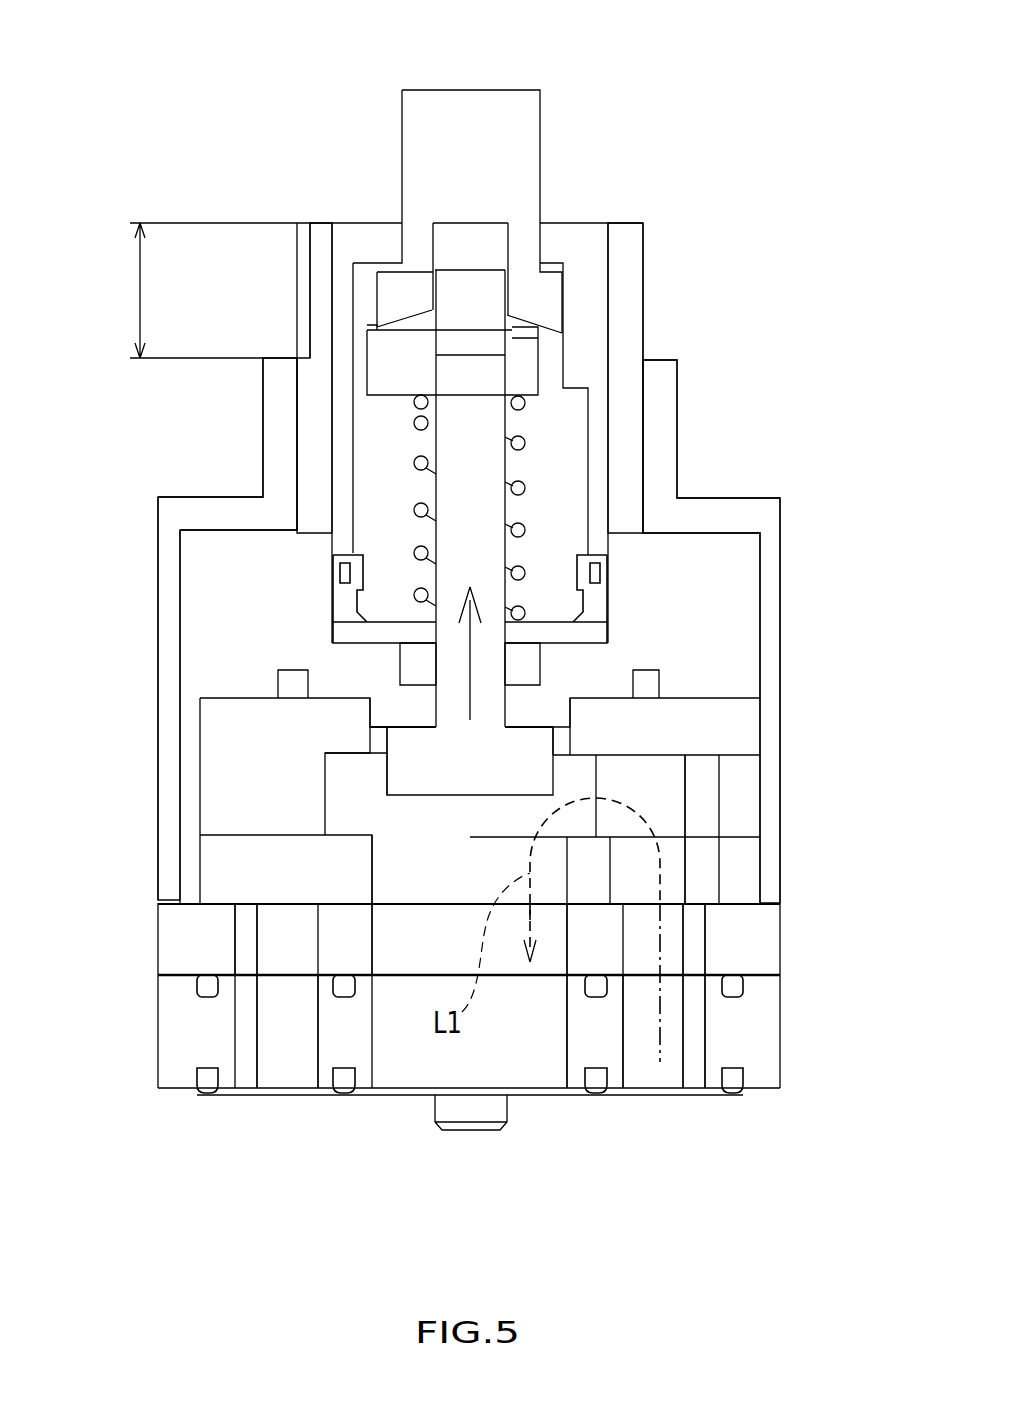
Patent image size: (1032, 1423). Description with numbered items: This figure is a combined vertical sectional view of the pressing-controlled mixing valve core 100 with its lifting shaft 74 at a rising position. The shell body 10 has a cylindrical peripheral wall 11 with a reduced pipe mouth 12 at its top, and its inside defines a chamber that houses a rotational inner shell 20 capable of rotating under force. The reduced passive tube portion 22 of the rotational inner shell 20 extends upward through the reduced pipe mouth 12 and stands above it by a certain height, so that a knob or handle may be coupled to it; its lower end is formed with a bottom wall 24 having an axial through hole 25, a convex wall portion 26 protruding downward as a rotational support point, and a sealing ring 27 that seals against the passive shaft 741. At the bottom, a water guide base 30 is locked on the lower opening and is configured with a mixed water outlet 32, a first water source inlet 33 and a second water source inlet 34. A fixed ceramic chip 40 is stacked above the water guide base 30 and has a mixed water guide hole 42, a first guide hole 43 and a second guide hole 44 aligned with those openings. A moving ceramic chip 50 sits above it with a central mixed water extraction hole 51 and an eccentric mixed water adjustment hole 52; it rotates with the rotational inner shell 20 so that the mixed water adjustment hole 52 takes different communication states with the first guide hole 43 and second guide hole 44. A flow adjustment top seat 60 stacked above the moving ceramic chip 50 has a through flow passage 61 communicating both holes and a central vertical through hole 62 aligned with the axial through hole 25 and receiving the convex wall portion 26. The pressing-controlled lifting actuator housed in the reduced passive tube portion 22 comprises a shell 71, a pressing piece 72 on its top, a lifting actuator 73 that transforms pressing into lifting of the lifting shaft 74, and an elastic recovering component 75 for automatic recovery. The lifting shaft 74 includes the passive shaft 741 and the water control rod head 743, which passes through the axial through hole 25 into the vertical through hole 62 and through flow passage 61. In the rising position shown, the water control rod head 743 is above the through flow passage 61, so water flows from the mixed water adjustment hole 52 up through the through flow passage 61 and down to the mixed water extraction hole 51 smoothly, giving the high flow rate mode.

The pressing-controlled mixing valve core 100 is at (750, 173).
The shell body 10 is at (155, 492).
The cylindrical peripheral wall 11 is at (160, 599).
The reduced pipe mouth 12 is at (297, 371).
The rotational inner shell 20 is at (707, 587).
The reduced passive tube portion 22 is at (310, 300).
The bottom wall 24 is at (550, 712).
The axial through hole 25 is at (487, 722).
The convex wall portion 26 is at (370, 712).
The sealing ring 27 is at (533, 662).
The water guide base 30 is at (782, 1040).
The mixed water outlet 32 is at (562, 1053).
The first water source inlet 33 is at (700, 1062).
The second water source inlet 34 is at (313, 1043).
The fixed ceramic chip 40 is at (782, 940).
The mixed water guide hole 42 is at (388, 950).
The first guide hole 43 is at (705, 948).
The second guide hole 44 is at (240, 932).
The moving ceramic chip 50 is at (745, 867).
The mixed water extraction hole 51 is at (373, 870).
The mixed water adjustment hole 52 is at (710, 887).
The flow adjustment top seat 60 is at (742, 768).
The through flow passage 61 is at (283, 870).
The vertical through hole 62 is at (388, 758).
The shell 71 is at (343, 304).
The pressing piece 72 is at (542, 88).
The lifting actuator 73 is at (540, 357).
The lifting shaft 74 is at (512, 507).
The elastic recovering component 75 is at (330, 437).
The passive shaft 741 is at (435, 490).
The water control rod head 743 is at (387, 783).